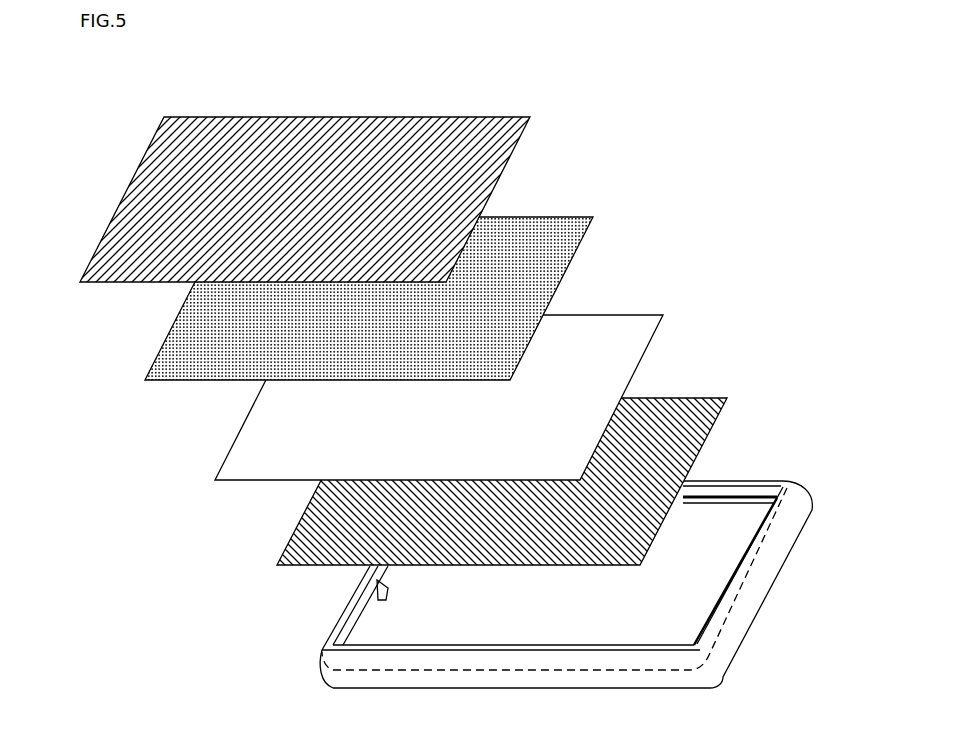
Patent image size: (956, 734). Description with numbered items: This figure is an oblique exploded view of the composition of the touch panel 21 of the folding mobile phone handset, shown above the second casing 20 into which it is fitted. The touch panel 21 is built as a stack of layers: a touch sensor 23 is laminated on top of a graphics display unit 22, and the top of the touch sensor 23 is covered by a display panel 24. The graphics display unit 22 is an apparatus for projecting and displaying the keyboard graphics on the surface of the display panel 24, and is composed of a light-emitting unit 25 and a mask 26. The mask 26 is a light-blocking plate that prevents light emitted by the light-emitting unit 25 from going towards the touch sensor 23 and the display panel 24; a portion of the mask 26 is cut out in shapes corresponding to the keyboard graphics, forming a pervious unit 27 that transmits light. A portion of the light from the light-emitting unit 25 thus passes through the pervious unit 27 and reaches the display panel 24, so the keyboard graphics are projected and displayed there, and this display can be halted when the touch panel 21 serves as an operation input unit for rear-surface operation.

The second casing 20 is at (793, 482).
The touch panel 21 is at (405, 330).
The graphics display unit 22 is at (493, 417).
The touch sensor 23 is at (593, 222).
The display panel 24 is at (532, 120).
The light-emitting unit 25 is at (663, 397).
The mask 26 is at (456, 374).
The pervious unit 27 is at (597, 325).